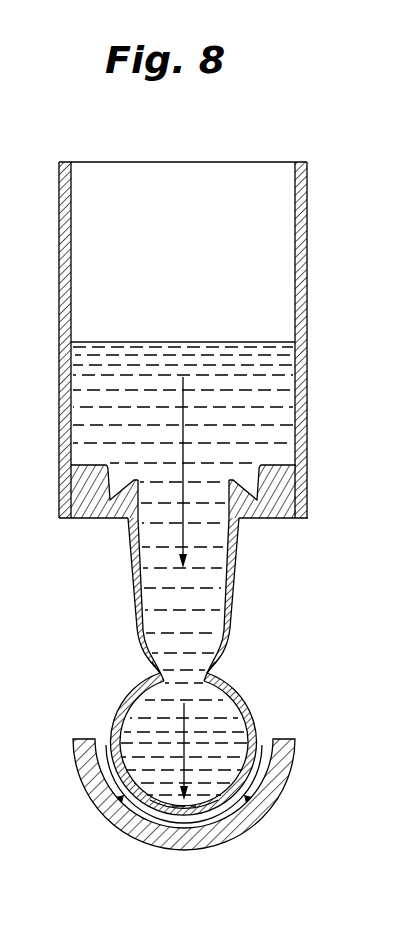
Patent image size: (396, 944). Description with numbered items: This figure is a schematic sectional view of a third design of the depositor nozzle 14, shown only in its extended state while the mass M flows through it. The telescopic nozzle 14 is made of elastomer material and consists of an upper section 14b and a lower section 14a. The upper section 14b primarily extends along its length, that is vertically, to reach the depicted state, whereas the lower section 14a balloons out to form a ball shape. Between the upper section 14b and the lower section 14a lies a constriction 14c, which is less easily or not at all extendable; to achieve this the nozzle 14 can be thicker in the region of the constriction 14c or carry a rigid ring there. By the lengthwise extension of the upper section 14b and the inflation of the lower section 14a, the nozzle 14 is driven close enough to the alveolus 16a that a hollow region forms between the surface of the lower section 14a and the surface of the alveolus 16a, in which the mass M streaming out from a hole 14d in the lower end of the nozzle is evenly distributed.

The nozzle 14 is at (244, 572).
The lower section 14a is at (256, 722).
The upper section 14b is at (130, 560).
The constriction 14c is at (212, 672).
The hole 14d is at (185, 814).
The alveolus 16a is at (258, 768).
The mass M is at (257, 423).